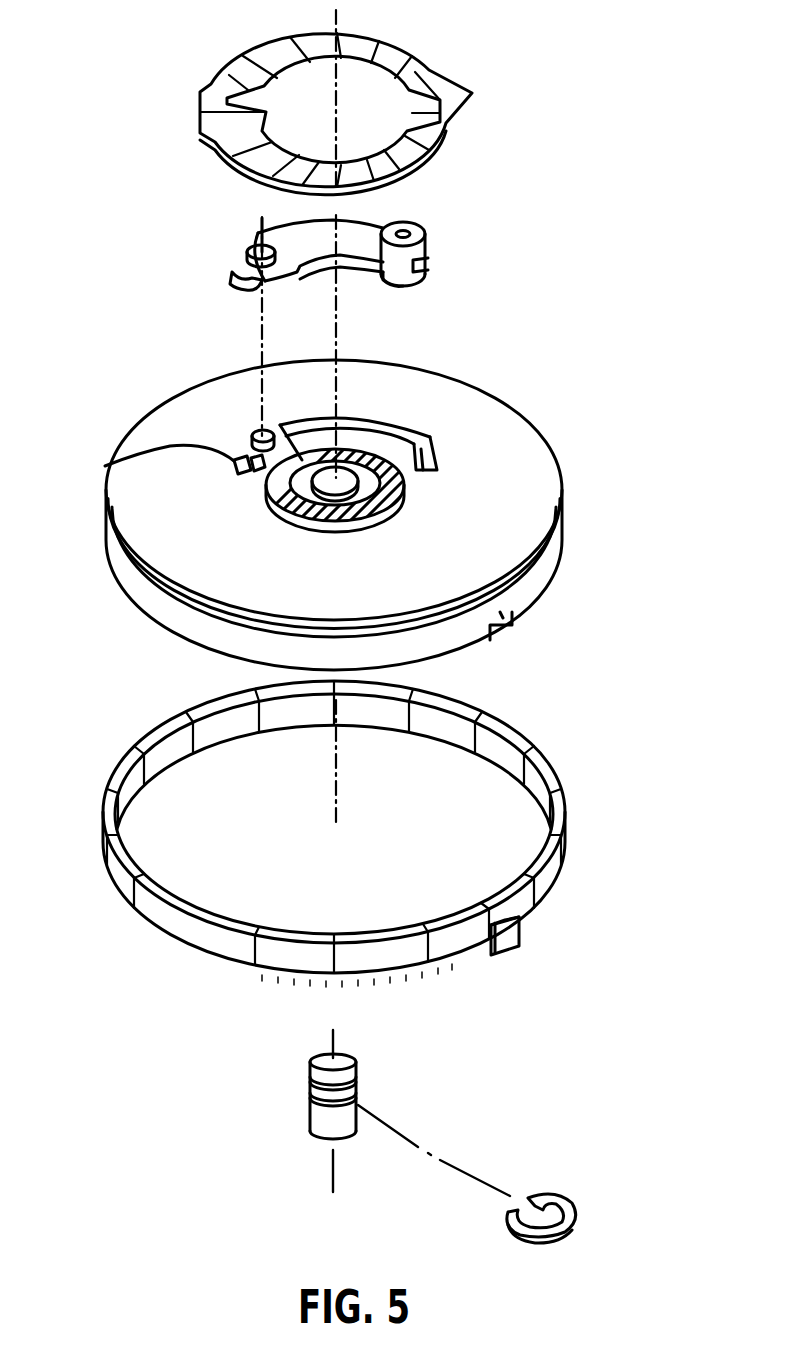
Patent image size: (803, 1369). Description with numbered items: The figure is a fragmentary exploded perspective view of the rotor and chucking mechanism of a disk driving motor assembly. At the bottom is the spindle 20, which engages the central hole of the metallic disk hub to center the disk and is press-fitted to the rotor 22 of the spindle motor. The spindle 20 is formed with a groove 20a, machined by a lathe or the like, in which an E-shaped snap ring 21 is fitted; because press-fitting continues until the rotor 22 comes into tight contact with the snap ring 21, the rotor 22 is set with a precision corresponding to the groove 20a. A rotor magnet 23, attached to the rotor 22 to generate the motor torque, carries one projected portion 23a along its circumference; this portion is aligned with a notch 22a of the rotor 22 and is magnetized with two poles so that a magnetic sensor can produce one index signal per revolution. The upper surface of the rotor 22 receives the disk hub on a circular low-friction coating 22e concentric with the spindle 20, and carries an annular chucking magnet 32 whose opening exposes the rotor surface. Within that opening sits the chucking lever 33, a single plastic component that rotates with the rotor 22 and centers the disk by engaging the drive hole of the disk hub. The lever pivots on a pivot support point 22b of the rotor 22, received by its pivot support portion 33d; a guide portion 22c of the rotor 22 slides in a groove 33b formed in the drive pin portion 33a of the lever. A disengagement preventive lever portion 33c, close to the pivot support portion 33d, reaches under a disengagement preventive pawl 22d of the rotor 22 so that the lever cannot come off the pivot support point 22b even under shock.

The chucking magnet 32 is at (438, 53).
The chucking lever 33 is at (370, 280).
The drive pin portion 33a is at (418, 225).
The groove 33b is at (430, 264).
The disengagement preventive lever portion 33c is at (230, 276).
The pivot support portion 33d is at (250, 247).
The rotor 22 is at (565, 492).
The notch 22a is at (505, 625).
The pivot support point 22b is at (253, 434).
The guide portion 22c is at (420, 440).
The disengagement preventive pawl 22d is at (105, 466).
The coating 22e is at (398, 492).
The rotor magnet 23 is at (566, 802).
The projected portion 23a is at (512, 953).
The spindle 20 is at (356, 1062).
The groove 20a is at (356, 1090).
The E-shaped snap ring 21 is at (545, 1196).